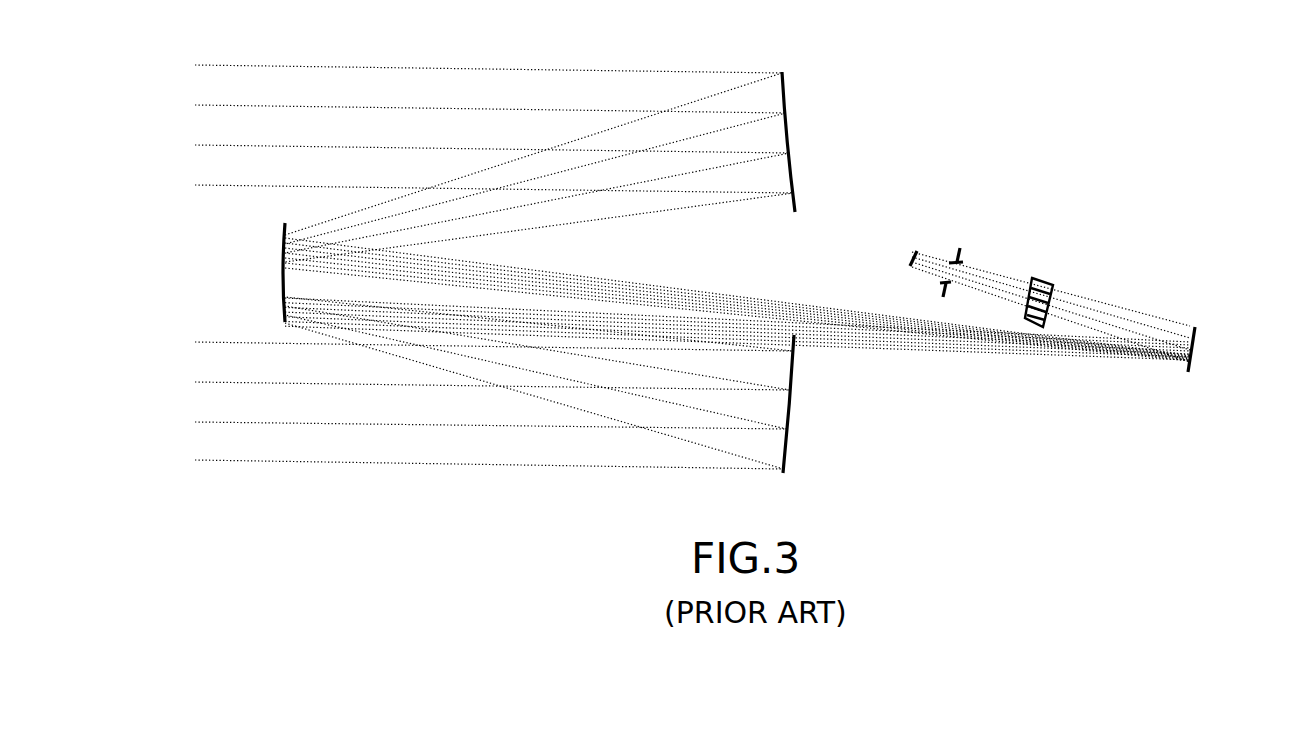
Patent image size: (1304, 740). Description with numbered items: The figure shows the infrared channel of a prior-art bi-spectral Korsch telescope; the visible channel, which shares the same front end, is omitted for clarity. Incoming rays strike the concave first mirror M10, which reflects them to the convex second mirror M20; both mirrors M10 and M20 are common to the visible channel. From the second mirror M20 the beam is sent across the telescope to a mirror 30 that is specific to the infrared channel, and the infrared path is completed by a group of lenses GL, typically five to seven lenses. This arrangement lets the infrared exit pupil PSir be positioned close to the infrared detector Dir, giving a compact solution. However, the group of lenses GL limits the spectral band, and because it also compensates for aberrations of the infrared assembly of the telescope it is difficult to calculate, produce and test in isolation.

The first mirror M10 is at (790, 138).
The second mirror M20 is at (282, 277).
The detector Dir is at (915, 251).
The IR exit pupil PSir is at (961, 249).
The group of lenses GL is at (1061, 281).
The mirror 30 is at (1192, 349).